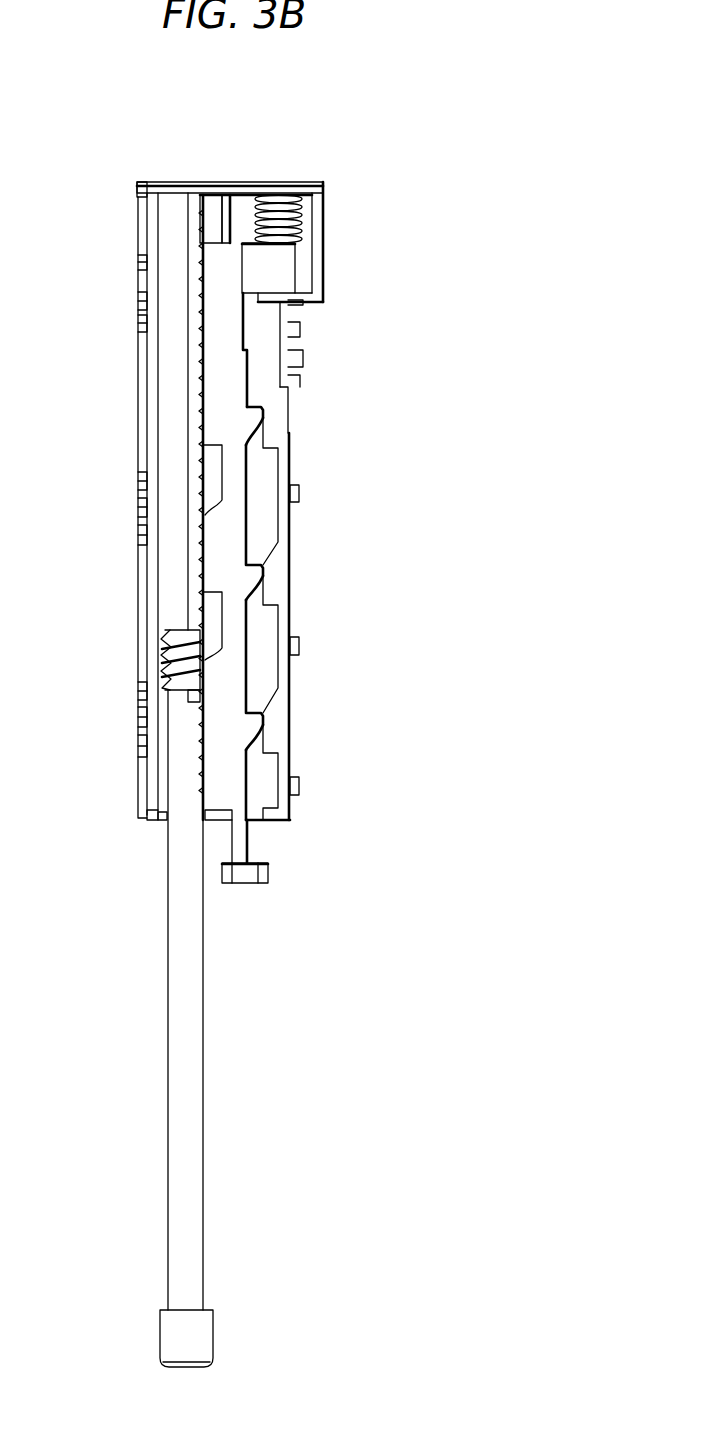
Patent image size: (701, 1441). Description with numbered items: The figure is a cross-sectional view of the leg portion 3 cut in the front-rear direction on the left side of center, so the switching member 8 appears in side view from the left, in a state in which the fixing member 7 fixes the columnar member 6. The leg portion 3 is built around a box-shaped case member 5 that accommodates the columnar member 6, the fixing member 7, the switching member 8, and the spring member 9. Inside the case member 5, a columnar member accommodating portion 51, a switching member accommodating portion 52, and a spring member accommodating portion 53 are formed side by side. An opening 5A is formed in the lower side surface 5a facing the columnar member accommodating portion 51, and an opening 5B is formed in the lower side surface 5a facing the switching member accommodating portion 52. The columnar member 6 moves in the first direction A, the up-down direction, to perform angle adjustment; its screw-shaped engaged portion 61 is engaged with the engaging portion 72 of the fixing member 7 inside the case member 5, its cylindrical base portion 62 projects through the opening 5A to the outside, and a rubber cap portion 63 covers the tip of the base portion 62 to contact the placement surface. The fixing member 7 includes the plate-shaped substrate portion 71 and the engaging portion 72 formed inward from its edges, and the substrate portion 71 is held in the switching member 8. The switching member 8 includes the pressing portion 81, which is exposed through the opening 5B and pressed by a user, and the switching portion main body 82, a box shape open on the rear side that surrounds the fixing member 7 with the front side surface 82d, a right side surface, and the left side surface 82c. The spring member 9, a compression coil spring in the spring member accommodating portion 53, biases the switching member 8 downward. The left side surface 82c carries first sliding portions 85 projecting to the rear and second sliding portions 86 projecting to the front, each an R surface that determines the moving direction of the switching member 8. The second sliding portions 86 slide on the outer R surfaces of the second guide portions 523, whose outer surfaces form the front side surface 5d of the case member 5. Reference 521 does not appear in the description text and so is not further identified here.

The leg portion 3 is at (363, 165).
The case member 5 is at (160, 183).
The lower side surface 5a is at (163, 820).
The opening 5A is at (167, 822).
The opening 5B is at (250, 818).
The front side surface 5d is at (290, 410).
The columnar member 6 is at (133, 1028).
The fixing member 7 is at (239, 157).
The switching member 8 is at (365, 613).
The spring member 9 is at (300, 225).
The columnar member accommodating portion 51 is at (168, 392).
The switching member accommodating portion 52 is at (334, 521).
The spring member accommodating portion 53 is at (305, 268).
The engaged portion 61 is at (175, 637).
The base portion 62 is at (168, 1200).
The cap portion 63 is at (160, 1340).
The substrate portion 71 is at (227, 197).
The engaging portion 72 is at (210, 207).
The pressing portion 81 is at (250, 885).
The switching portion main body 82 is at (265, 794).
The left side surface 82c is at (222, 767).
The front side surface 82d is at (297, 490).
The first sliding portion 85 is at (210, 508).
The second sliding portion 86 is at (280, 425).
The rack teeth 521 is at (195, 283).
The second guide portion 523 is at (280, 407).
The first direction A is at (228, 1108).